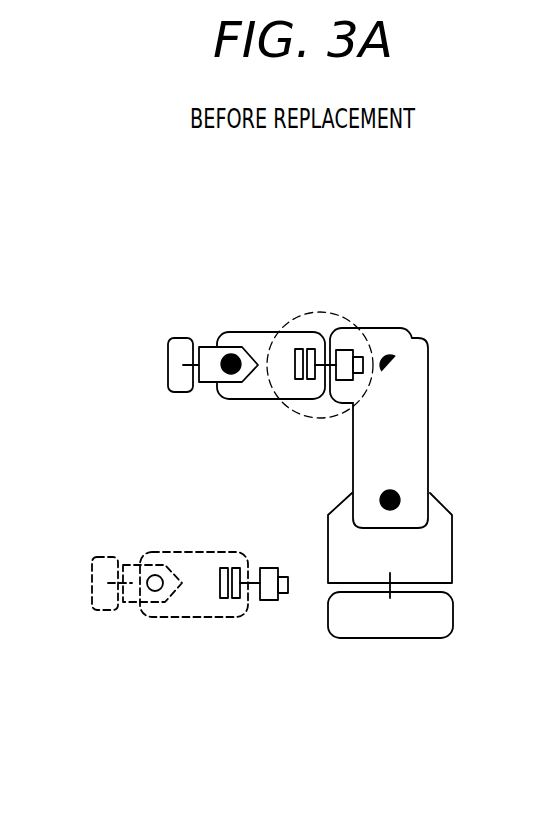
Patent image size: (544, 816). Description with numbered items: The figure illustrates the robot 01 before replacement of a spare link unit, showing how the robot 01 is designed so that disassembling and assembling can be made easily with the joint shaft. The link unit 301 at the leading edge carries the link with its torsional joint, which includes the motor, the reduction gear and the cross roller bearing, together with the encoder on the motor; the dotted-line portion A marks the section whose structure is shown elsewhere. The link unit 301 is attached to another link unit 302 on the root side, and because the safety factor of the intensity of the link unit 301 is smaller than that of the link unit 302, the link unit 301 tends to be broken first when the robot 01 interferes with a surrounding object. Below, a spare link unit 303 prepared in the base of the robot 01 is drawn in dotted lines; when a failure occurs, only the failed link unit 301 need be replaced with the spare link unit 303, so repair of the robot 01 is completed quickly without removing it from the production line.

The robot 01 is at (435, 240).
The link unit 301 is at (327, 289).
The link unit 302 is at (477, 320).
The spare link unit 303 is at (252, 528).